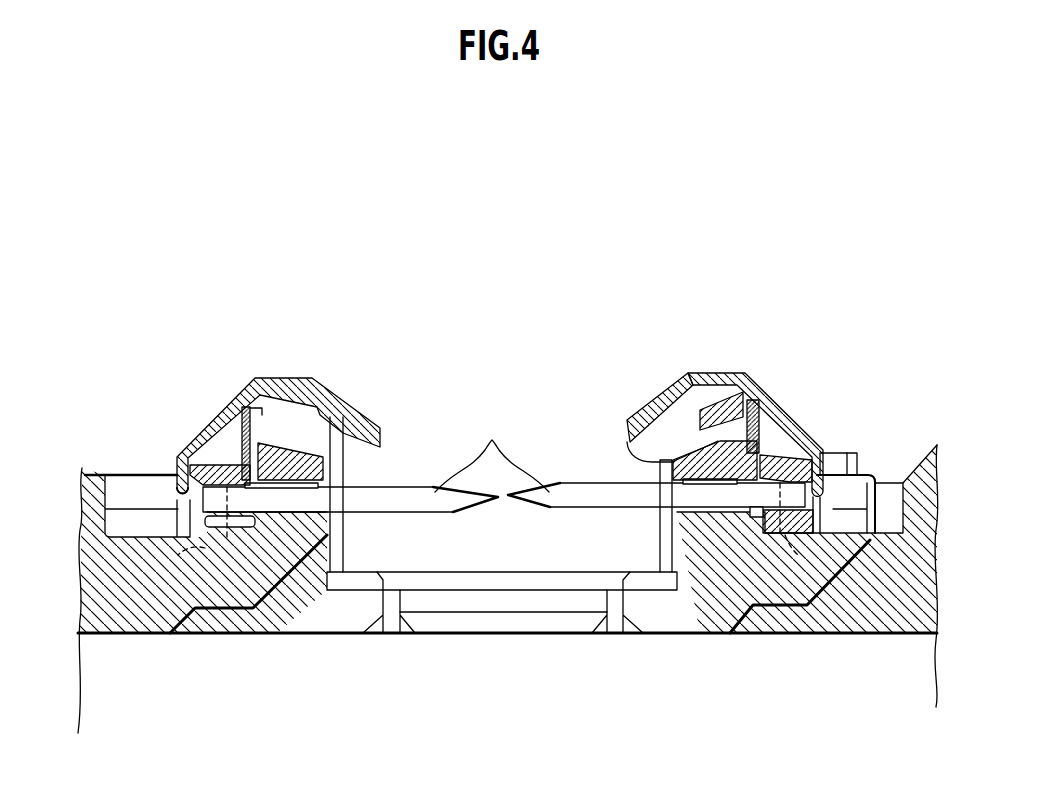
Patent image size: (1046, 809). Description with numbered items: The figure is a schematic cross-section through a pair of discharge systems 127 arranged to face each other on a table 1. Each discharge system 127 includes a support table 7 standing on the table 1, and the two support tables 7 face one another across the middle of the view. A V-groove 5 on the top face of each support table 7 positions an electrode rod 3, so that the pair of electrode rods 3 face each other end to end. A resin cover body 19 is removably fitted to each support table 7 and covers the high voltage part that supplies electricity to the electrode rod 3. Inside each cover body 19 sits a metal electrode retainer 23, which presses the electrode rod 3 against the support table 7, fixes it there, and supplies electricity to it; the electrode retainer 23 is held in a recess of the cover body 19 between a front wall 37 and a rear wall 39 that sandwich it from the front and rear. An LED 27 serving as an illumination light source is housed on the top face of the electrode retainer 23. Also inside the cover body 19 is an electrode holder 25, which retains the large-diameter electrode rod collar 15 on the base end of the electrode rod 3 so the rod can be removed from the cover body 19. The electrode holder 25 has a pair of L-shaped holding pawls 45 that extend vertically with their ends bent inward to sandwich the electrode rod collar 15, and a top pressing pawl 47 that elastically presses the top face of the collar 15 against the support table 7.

The table 1 is at (858, 622).
The electrode rod 3 is at (492, 452).
The V-groove 5 is at (277, 527).
The support table 7 is at (690, 538).
The electrode rod collar 15 is at (257, 543).
The cover body 19 is at (230, 398).
The electrode retainer 23 is at (322, 470).
The electrode holder 25 is at (168, 481).
The LED 27 is at (648, 418).
The front wall 37 is at (347, 478).
The rear wall 39 is at (236, 414).
The holding pawl 45 is at (208, 560).
The top pressing pawl 47 is at (183, 493).
The discharge system 127 is at (241, 275).